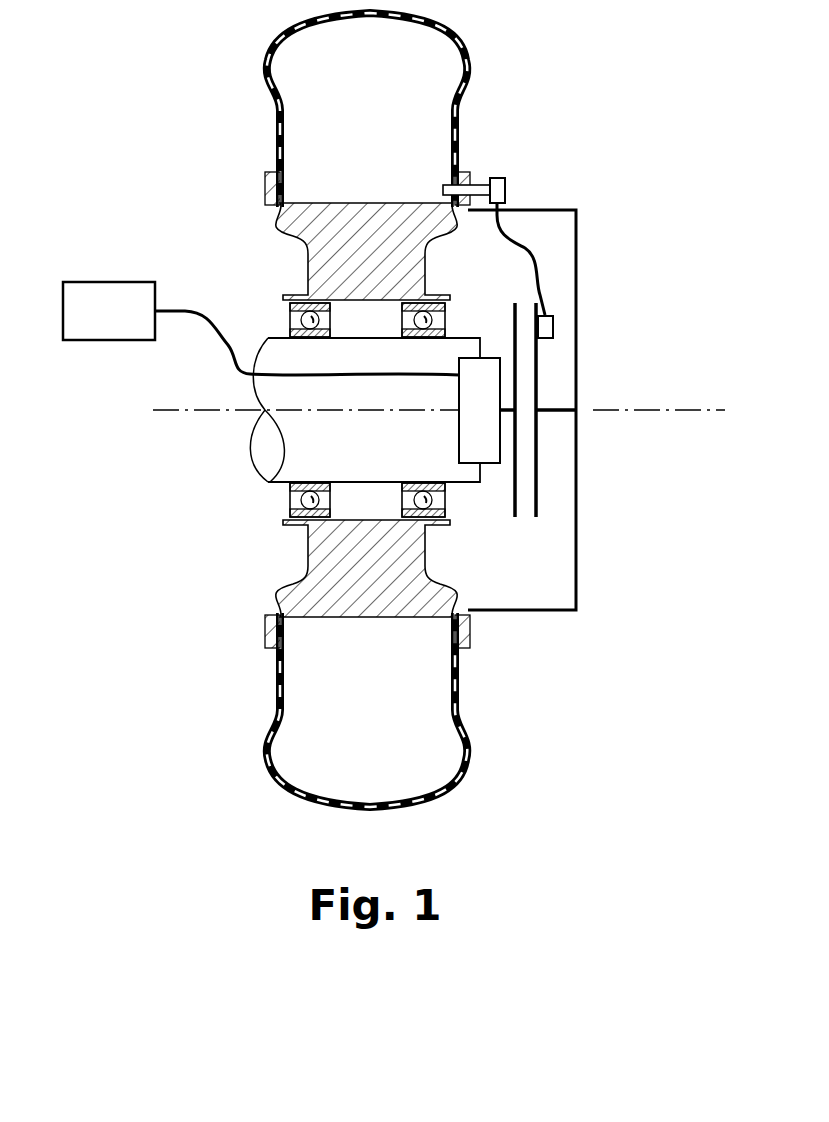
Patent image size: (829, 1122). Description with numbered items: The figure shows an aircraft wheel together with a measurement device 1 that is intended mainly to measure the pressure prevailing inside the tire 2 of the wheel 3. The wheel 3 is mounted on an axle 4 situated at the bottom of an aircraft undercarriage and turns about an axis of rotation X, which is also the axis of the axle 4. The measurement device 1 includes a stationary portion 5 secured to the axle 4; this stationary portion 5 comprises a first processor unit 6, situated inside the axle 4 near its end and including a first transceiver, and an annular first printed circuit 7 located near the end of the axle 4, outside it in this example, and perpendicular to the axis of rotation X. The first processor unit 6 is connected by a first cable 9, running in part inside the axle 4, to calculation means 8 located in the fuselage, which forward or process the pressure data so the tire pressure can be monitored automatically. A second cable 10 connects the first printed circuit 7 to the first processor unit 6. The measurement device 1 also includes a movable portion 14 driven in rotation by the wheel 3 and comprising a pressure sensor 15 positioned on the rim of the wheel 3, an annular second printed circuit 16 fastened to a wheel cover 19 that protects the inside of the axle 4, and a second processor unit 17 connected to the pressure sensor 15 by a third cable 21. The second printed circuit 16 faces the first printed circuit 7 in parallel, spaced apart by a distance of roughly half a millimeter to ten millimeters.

The measurement device 1 is at (556, 409).
The tire 2 is at (470, 57).
The wheel 3 is at (240, 612).
The axle 4 is at (278, 336).
The stationary portion 5 is at (432, 410).
The first processor unit 6 is at (458, 390).
The first printed circuit 7 is at (511, 322).
The calculation means 8 is at (109, 311).
The first cable 9 is at (186, 310).
The second cable 10 is at (508, 408).
The movable portion 14 is at (550, 508).
The pressure sensor 15 is at (507, 190).
The second printed circuit 16 is at (538, 452).
The second processor unit 17 is at (553, 327).
The wheel cover 19 is at (578, 236).
The third cable 21 is at (545, 282).
The axis of rotation X is at (708, 408).